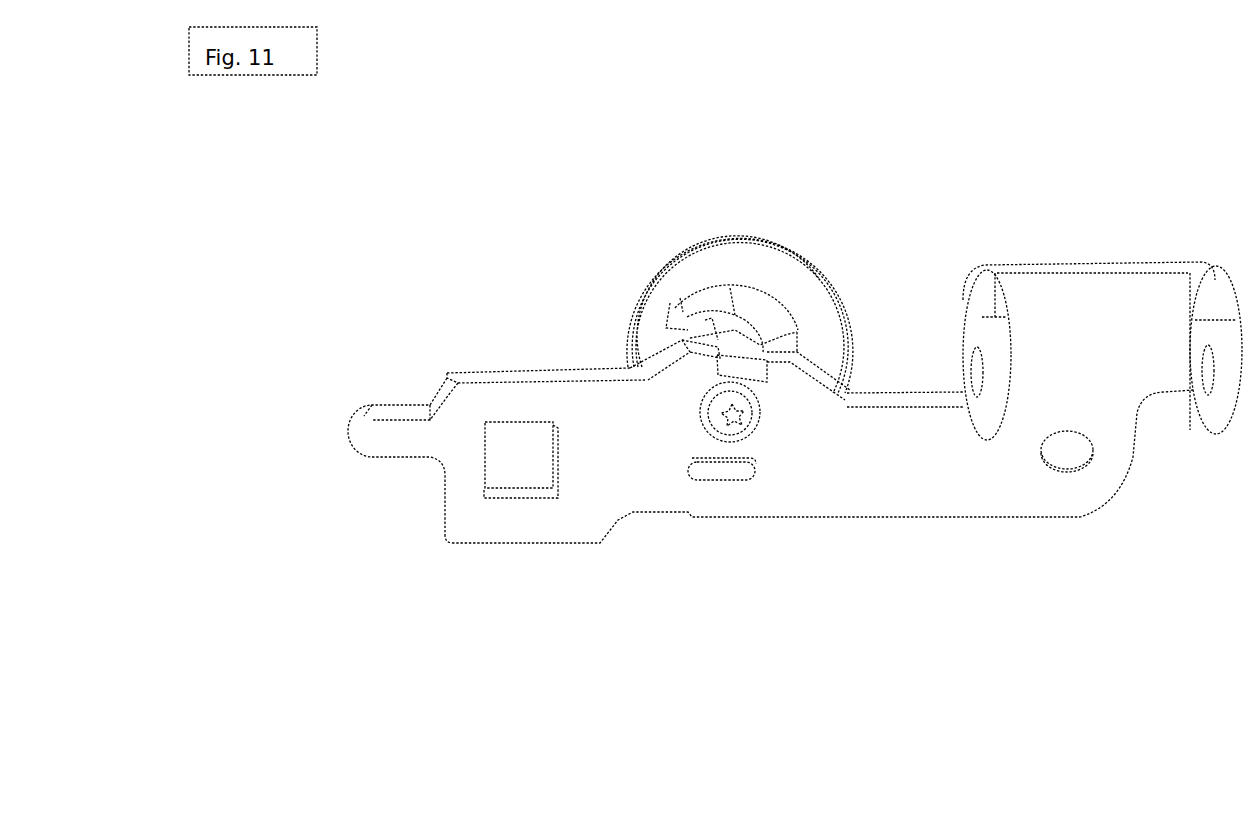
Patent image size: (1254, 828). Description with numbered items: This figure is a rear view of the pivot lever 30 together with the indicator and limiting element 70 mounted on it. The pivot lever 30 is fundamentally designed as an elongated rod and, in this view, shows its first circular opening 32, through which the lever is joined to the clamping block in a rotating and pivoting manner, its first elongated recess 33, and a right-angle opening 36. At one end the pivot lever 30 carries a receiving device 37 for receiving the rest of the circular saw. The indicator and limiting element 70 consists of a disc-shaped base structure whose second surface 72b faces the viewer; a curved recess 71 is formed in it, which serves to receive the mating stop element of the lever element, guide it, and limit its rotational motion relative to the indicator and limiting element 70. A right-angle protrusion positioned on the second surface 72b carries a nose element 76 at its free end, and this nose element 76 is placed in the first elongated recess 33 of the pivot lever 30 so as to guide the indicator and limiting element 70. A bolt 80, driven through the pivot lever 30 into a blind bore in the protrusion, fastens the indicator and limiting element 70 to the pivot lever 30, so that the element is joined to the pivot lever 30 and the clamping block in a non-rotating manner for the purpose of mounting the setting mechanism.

The pivot lever 30 is at (963, 478).
The first circular opening 32 is at (1070, 457).
The first elongated recess 33 is at (725, 468).
The right-angle opening 36 is at (525, 487).
The receiving device 37 is at (1095, 262).
The indicator and limiting element 70 is at (793, 277).
The curved recess 71 is at (752, 300).
The second surface 72b is at (685, 272).
The nose element 76 is at (753, 357).
The bolt 80 is at (747, 418).